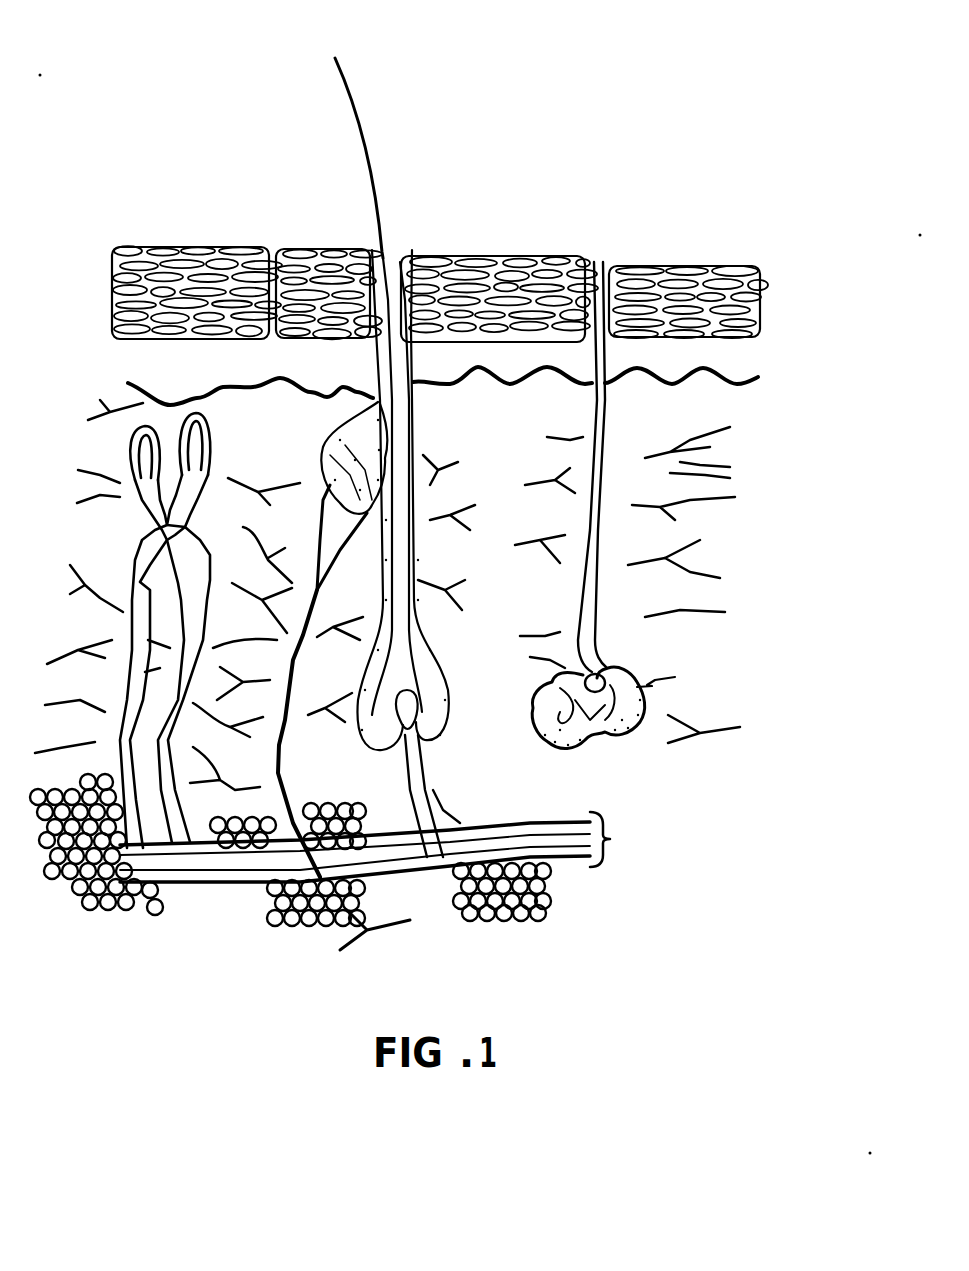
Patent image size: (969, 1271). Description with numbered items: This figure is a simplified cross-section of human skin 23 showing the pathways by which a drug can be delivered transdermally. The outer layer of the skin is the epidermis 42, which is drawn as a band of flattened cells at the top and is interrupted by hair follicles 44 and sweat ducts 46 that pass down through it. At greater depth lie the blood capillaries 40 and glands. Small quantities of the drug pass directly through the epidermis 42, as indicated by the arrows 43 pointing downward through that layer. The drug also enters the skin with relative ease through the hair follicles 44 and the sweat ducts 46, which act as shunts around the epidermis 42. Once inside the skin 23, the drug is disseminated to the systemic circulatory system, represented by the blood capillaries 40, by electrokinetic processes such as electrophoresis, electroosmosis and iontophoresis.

The human skin 23 is at (802, 925).
The blood capillaries 40 is at (207, 479).
The epidermis 42 is at (760, 252).
The arrows 43 is at (152, 355).
The hair follicles 44 is at (337, 213).
The sweat ducts 46 is at (610, 250).